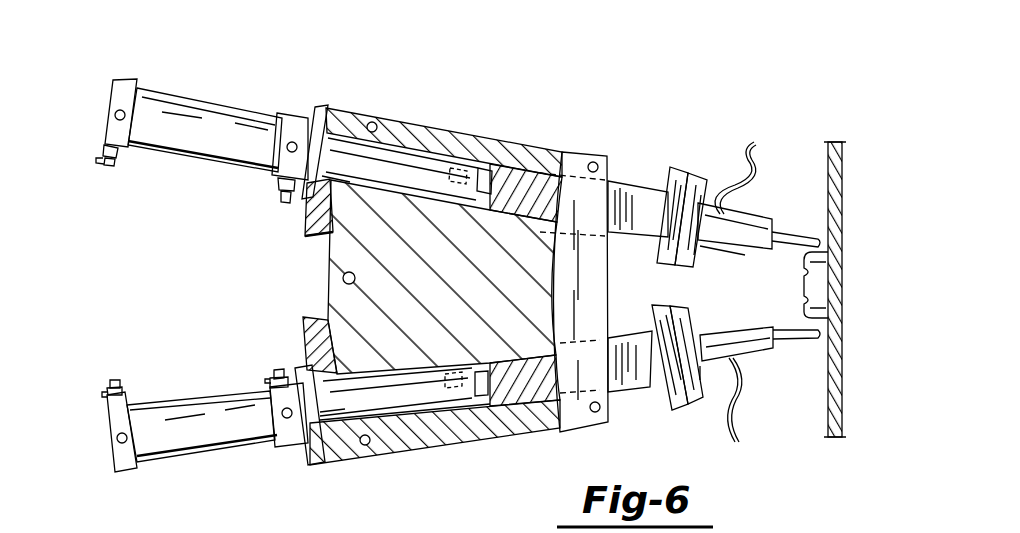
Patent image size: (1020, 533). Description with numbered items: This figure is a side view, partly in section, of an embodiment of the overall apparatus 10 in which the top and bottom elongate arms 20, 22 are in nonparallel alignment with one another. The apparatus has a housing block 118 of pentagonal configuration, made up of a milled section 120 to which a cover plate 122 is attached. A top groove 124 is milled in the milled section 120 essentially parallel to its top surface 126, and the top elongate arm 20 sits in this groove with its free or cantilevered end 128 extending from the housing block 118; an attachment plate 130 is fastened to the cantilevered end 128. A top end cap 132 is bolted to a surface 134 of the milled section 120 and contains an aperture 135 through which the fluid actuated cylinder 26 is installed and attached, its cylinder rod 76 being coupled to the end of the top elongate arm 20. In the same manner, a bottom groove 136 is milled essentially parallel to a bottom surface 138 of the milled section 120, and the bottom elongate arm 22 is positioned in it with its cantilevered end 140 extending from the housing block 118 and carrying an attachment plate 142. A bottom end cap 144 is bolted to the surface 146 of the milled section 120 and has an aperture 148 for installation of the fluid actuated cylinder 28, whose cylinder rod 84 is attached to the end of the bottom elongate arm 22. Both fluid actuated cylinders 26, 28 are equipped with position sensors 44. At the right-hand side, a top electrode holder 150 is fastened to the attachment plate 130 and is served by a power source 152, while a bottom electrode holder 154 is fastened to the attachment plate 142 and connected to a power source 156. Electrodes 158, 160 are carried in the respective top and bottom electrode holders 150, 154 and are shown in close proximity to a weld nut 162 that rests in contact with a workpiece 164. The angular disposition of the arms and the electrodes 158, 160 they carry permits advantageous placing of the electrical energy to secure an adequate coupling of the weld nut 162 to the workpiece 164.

The overall apparatus 10 is at (551, 120).
The top elongate arm 20 is at (650, 220).
The bottom elongate arm 22 is at (647, 357).
The fluid actuated cylinder 26 is at (168, 93).
The fluid actuated cylinder 28 is at (213, 397).
The position sensors 44 is at (103, 158).
The cylinder rod 76 is at (427, 193).
The cylinder rod 84 is at (423, 380).
The housing block 118 is at (452, 157).
The milled section 120 is at (320, 272).
The cover plate 122 is at (583, 253).
The top groove 124 is at (462, 155).
The top surface 126 is at (558, 150).
The cantilevered end 128 is at (623, 187).
The attachment plate 130 is at (683, 170).
The top end cap 132 is at (343, 103).
The surface 134 is at (323, 246).
The aperture 135 is at (343, 174).
The bottom groove 136 is at (413, 413).
The bottom surface 138 is at (513, 437).
The cantilevered end 140 is at (620, 387).
The attachment plate 142 is at (667, 407).
The bottom end cap 144 is at (340, 467).
The surface 146 is at (322, 300).
The aperture 148 is at (337, 420).
The top electrode holder 150 is at (722, 269).
The power source 152 is at (757, 172).
The bottom electrode holder 154 is at (707, 333).
The power source 156 is at (740, 408).
The electrode 158 is at (793, 237).
The electrode 160 is at (805, 330).
The weld nut 162 is at (804, 288).
The workpiece 164 is at (840, 380).